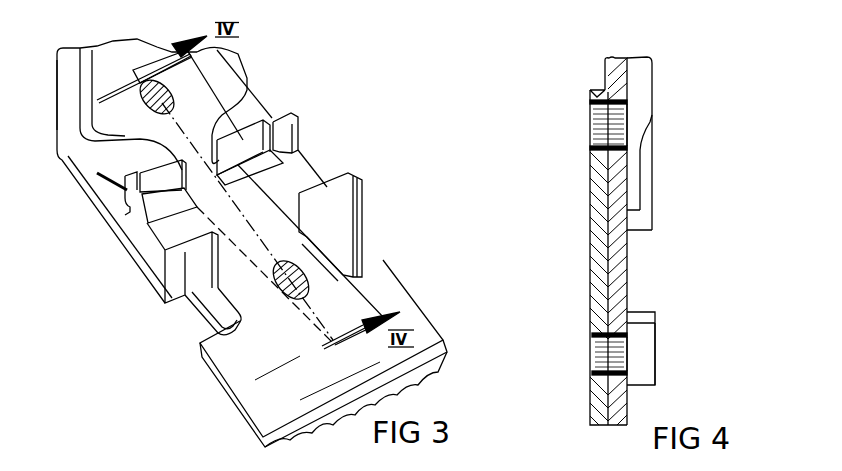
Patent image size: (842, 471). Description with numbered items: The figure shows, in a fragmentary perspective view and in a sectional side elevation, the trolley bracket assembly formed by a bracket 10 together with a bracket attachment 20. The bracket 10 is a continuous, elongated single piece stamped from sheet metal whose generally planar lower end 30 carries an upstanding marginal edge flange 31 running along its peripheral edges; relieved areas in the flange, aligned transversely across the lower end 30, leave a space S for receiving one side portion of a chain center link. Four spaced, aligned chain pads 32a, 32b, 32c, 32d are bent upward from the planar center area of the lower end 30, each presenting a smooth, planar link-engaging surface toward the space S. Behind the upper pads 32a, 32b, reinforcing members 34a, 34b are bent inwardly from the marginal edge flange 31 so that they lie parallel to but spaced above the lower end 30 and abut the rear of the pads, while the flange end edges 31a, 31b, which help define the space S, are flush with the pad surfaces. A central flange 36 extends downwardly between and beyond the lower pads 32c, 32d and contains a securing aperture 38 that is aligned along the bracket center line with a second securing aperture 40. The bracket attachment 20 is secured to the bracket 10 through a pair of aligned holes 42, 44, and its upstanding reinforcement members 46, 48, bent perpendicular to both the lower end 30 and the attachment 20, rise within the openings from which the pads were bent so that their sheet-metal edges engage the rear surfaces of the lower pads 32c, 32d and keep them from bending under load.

In FIG. 3, the bracket 10 is at (112, 40).
In FIG. 3, the bracket attachment 20 is at (205, 379).
In FIG. 4, the bracket attachment 20 is at (584, 210).
In FIG. 3, the lower end 30 is at (130, 121).
In FIG. 4, the lower end 30 is at (610, 70).
In FIG. 3, the marginal edge flange 31 is at (80, 89).
In FIG. 4, the marginal edge flange 31 is at (642, 78).
In FIG. 3, the end edge of marginal edge flange 31a is at (290, 133).
In FIG. 3, the end edge of marginal edge flange 31b is at (127, 205).
In FIG. 3, the chain pad 32a is at (258, 125).
In FIG. 4, the chain pad 32a is at (640, 222).
In FIG. 3, the chain pad 32b is at (133, 180).
In FIG. 3, the chain pad 32c is at (160, 280).
In FIG. 3, the chain pad 32d is at (347, 193).
In FIG. 4, the chain pad 32d is at (645, 323).
In FIG. 3, the reinforcing member 34a is at (268, 117).
In FIG. 4, the reinforcing member 34a is at (647, 178).
In FIG. 3, the reinforcing member 34b is at (157, 164).
In FIG. 3, the central flange 36 is at (345, 297).
In FIG. 3, the securing aperture 38 is at (278, 266).
In FIG. 4, the securing aperture 38 is at (630, 372).
In FIG. 3, the second securing aperture 40 is at (166, 100).
In FIG. 4, the second securing aperture 40 is at (618, 108).
In FIG. 4, the hole 42 is at (593, 113).
In FIG. 4, the hole 44 is at (592, 345).
In FIG. 3, the reinforcement member 46 is at (210, 303).
In FIG. 3, the reinforcement member 48 is at (360, 228).
In FIG. 4, the reinforcement member 48 is at (645, 357).
In FIG. 3, the space S is at (300, 172).
In FIG. 4, the space S is at (645, 280).